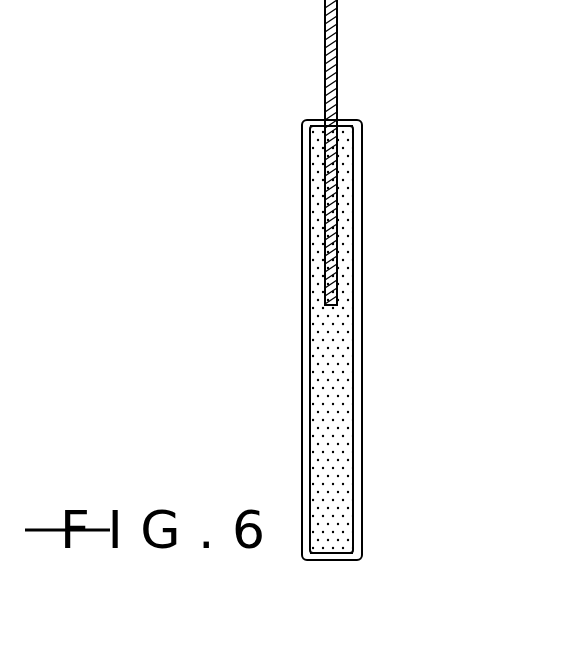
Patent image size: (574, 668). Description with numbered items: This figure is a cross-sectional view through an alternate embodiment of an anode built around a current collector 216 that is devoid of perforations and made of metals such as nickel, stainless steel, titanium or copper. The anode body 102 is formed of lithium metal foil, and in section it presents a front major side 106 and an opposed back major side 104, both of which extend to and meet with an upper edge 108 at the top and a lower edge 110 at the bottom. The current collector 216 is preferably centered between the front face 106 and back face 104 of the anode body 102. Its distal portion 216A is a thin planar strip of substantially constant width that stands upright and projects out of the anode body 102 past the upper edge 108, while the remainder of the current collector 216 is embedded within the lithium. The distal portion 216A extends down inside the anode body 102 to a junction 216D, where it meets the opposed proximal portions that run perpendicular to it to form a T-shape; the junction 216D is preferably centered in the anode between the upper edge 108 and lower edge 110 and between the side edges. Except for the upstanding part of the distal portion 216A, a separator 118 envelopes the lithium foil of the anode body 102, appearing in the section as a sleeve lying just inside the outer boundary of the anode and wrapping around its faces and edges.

The anode body 102 is at (345, 451).
The back major side 104 is at (361, 366).
The front major side 106 is at (302, 338).
The upper edge 108 is at (342, 123).
The lower edge 110 is at (333, 563).
The separator 118 is at (362, 222).
The current collector 216 is at (325, 88).
The distal portion 216A is at (325, 44).
The junction 216D is at (337, 285).